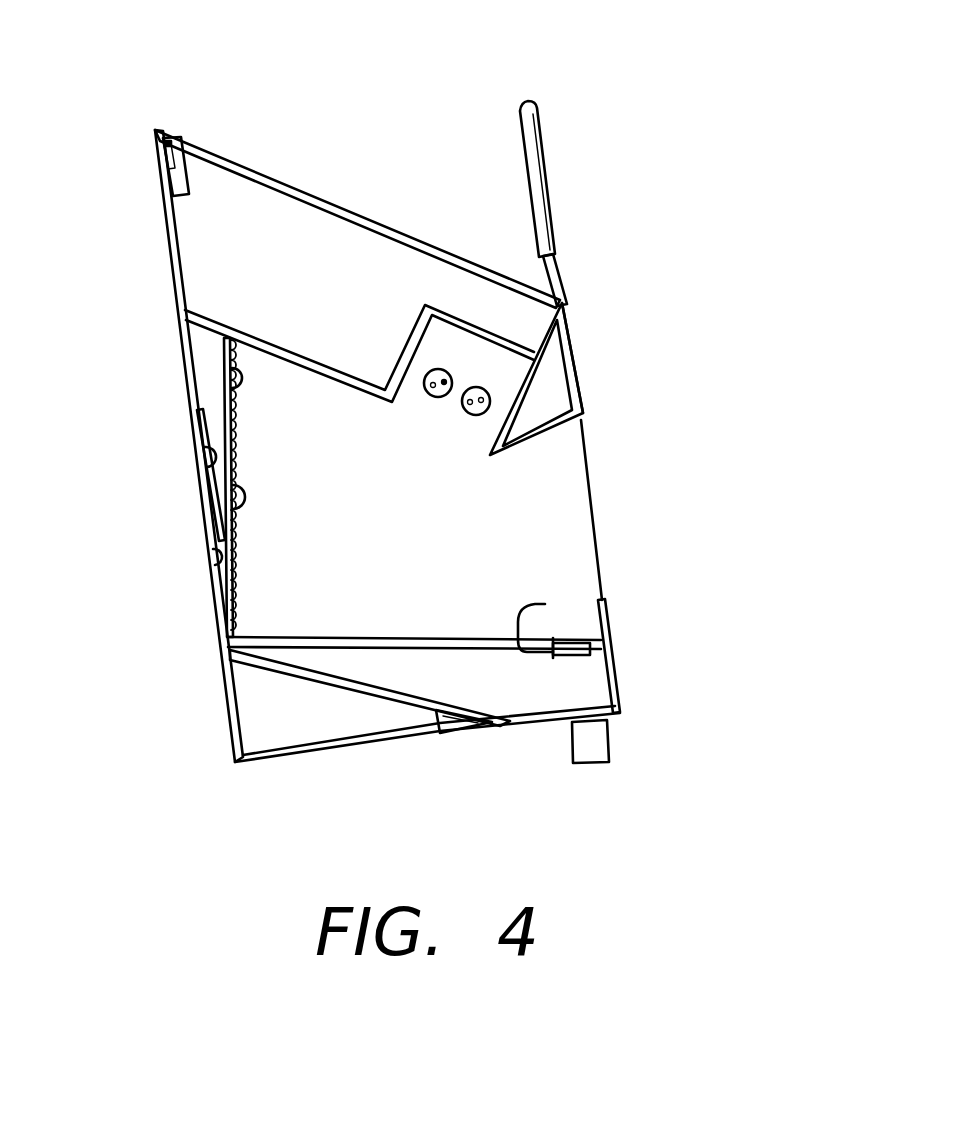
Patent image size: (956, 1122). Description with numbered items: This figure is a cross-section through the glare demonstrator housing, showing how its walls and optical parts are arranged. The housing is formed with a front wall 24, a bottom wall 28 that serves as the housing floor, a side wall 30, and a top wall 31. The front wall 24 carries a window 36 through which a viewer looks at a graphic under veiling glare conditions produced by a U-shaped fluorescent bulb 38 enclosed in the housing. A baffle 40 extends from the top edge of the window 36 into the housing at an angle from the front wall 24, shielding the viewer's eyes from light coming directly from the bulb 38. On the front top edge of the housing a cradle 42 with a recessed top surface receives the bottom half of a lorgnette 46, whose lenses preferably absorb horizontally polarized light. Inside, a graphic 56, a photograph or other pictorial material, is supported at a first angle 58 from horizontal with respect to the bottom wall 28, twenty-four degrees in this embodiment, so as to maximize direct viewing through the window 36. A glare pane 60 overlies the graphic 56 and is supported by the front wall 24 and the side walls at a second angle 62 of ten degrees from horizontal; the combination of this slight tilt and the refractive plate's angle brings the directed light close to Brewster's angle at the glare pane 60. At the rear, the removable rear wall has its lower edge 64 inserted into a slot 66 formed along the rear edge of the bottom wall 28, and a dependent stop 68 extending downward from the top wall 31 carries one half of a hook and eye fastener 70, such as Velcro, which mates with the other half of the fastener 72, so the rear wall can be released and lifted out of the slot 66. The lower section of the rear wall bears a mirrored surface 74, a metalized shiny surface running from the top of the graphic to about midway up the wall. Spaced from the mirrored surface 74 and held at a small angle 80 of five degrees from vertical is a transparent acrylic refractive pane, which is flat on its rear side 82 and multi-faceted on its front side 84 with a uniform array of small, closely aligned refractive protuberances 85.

The front wall 24 is at (626, 700).
The bottom wall 28 is at (520, 725).
The side wall 30 is at (362, 282).
The top wall 31 is at (285, 180).
The window 36 is at (606, 603).
The U-shaped fluorescent bulb 38 is at (432, 369).
The baffle 40 is at (542, 433).
The cradle 42 is at (565, 283).
The lorgnette 46 is at (545, 145).
The graphic 56 is at (325, 677).
The first angle 58 is at (440, 714).
The glare pane 60 is at (425, 638).
The second angle 62 is at (545, 604).
The lower edge 64 is at (235, 752).
The slot 66 is at (250, 748).
The dependent stop 68 is at (188, 178).
The hook and eye fastener 70 is at (165, 137).
The fastener 72 is at (168, 167).
The mirrored surface 74 is at (215, 547).
The small angle 80 is at (208, 450).
The rear side 82 is at (232, 392).
The front side 84 is at (249, 492).
The refractive protuberances 85 is at (226, 340).